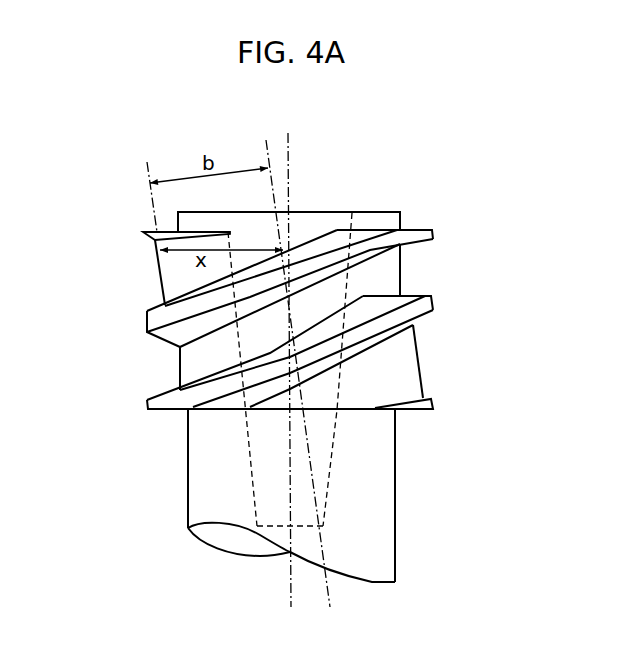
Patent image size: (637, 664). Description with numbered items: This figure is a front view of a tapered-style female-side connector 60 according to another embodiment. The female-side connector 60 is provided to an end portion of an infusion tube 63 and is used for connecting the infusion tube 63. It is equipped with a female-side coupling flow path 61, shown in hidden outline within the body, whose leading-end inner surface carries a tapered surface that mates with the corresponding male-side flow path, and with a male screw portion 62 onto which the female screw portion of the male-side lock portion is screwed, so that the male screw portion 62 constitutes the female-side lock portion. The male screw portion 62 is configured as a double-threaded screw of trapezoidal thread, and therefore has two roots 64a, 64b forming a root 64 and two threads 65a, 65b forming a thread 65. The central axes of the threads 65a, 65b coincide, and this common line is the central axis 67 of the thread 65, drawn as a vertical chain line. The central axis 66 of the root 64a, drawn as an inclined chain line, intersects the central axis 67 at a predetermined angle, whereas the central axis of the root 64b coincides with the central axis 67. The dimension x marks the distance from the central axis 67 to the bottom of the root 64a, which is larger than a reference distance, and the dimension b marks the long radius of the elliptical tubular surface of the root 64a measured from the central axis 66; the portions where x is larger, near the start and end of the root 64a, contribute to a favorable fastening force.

The female-side connector 60 is at (466, 143).
The female-side coupling flow path 61 is at (332, 462).
The male screw portion 62 is at (525, 236).
The infusion tube 63 is at (395, 552).
The root 64 is at (80, 287).
The first root 64a is at (175, 277).
The second root 64b is at (197, 355).
The thread 65 is at (500, 245).
The first thread 65a is at (410, 240).
The second thread 65b is at (410, 323).
The central axis of the root 66 is at (266, 143).
The central axis of the thread 67 is at (289, 147).